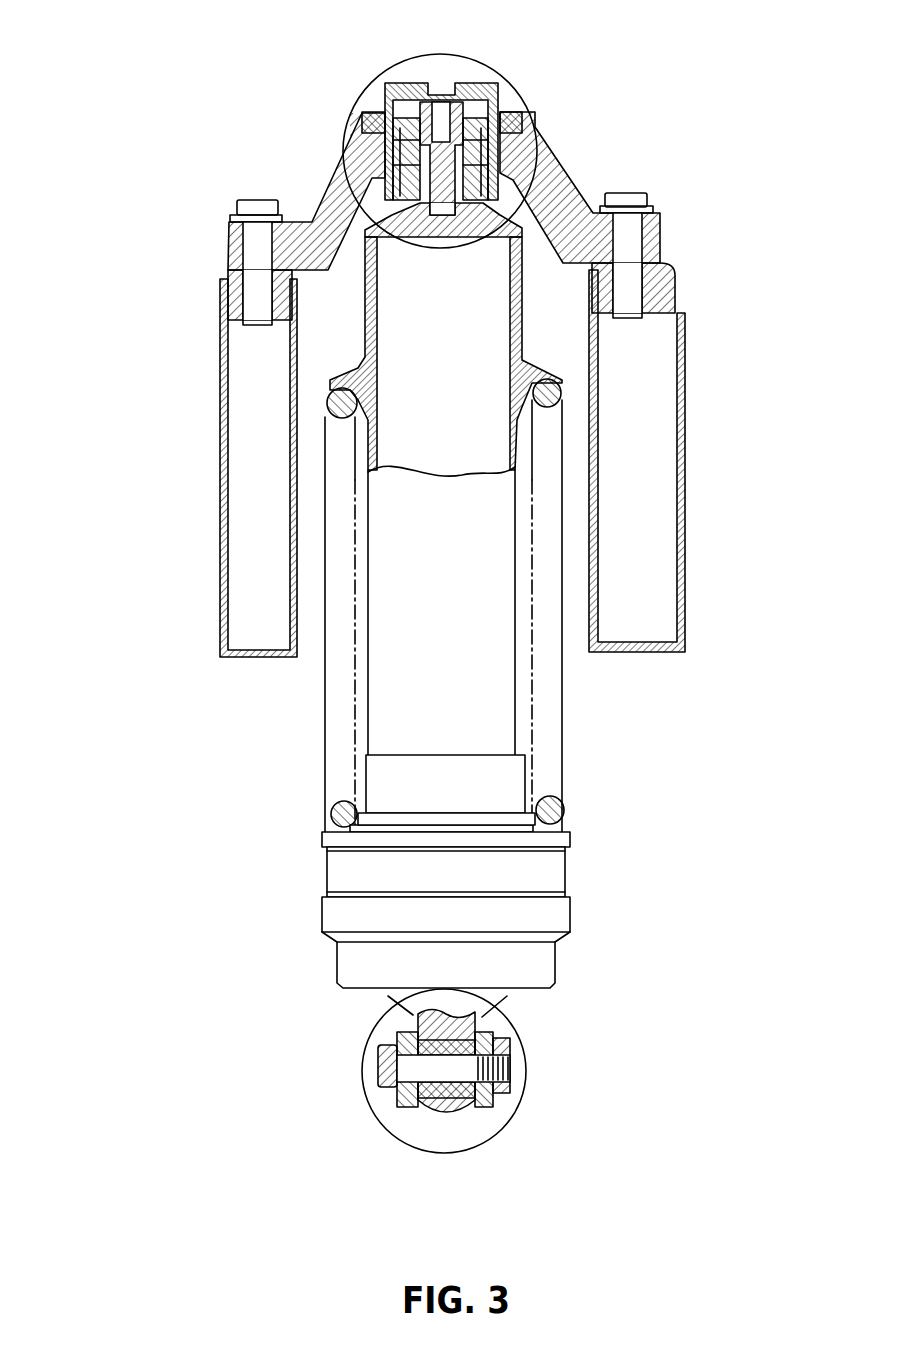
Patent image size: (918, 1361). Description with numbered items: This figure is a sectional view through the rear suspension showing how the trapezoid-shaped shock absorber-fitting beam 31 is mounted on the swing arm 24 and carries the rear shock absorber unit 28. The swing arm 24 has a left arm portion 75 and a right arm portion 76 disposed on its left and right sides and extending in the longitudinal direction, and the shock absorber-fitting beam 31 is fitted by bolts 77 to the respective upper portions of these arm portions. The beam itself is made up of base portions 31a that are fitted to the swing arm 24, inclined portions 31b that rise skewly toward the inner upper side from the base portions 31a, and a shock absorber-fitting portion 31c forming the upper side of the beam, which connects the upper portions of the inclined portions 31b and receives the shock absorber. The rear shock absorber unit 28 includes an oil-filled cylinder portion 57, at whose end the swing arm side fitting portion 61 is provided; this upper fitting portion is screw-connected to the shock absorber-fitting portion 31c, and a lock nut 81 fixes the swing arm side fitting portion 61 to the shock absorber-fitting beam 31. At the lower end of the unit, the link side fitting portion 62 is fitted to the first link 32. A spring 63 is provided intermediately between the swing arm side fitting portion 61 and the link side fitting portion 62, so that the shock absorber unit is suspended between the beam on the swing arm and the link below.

The swing arm 24 is at (217, 450).
The rear shock absorber unit 28 is at (325, 872).
The shock absorber-fitting beam 31 is at (324, 166).
The base portions 31a is at (293, 216).
The inclined portions 31b is at (320, 183).
The shock absorber-fitting portion 31c is at (530, 122).
The first link 32 is at (407, 1105).
The cylinder portion 57 is at (523, 343).
The swing arm side fitting portion 61 is at (481, 78).
The link side fitting portion 62 is at (465, 1118).
The spring 63 is at (552, 782).
The left arm portion 75 is at (222, 538).
The right arm portion 76 is at (684, 532).
The bolts 77 is at (248, 198).
The lock nut 81 is at (353, 118).